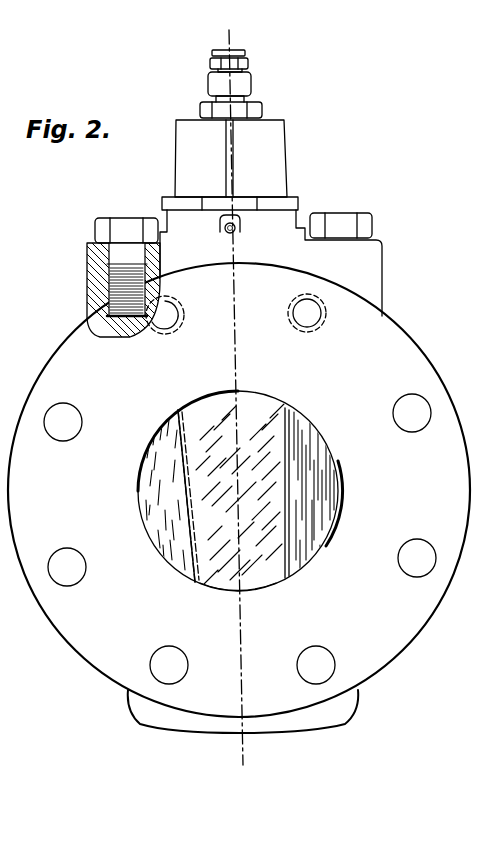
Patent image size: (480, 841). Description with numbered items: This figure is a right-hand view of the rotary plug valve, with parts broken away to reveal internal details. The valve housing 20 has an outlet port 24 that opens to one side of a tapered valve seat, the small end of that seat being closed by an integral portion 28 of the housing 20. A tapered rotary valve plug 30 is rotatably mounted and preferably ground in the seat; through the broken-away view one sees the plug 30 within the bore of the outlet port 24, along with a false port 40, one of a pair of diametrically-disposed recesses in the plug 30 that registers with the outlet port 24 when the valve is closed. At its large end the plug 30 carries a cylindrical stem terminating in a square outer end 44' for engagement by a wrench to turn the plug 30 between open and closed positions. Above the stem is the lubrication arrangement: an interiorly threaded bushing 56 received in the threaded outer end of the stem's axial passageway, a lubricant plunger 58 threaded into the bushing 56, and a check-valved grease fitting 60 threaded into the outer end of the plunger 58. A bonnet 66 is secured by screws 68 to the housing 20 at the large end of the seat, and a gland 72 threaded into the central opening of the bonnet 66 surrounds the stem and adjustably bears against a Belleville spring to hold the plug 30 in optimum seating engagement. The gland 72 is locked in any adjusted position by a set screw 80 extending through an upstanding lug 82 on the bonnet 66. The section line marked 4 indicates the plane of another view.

The section line 4- 4 is at (250, 38).
The valve housing 20 is at (385, 300).
The outlet port 24 is at (234, 590).
The integral portion of the housing 28 is at (300, 724).
The tapered rotary valve plug 30 is at (270, 547).
The false port 40 is at (268, 408).
The square outer end 44' is at (255, 158).
The bushing 56 is at (263, 108).
The lubricant plunger 58 is at (251, 86).
The grease fitting 60 is at (248, 62).
The bonnet 66 is at (385, 249).
The screws 68 is at (114, 220).
The gland 72 is at (300, 200).
The set screw 80 is at (238, 230).
The upstanding lug 82 is at (220, 223).